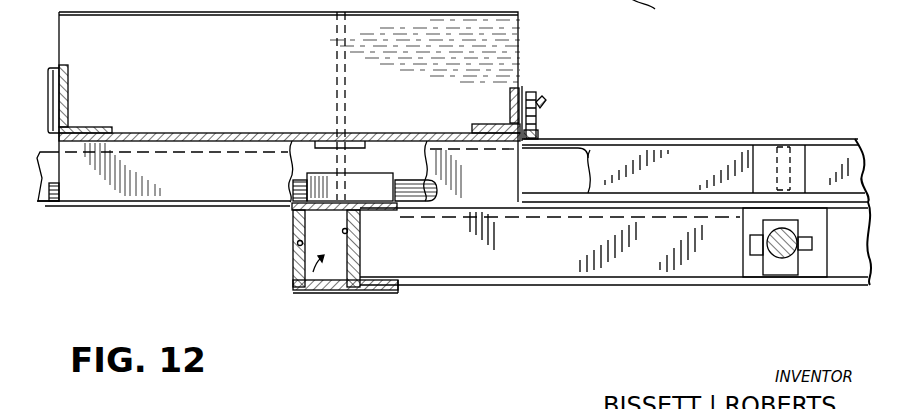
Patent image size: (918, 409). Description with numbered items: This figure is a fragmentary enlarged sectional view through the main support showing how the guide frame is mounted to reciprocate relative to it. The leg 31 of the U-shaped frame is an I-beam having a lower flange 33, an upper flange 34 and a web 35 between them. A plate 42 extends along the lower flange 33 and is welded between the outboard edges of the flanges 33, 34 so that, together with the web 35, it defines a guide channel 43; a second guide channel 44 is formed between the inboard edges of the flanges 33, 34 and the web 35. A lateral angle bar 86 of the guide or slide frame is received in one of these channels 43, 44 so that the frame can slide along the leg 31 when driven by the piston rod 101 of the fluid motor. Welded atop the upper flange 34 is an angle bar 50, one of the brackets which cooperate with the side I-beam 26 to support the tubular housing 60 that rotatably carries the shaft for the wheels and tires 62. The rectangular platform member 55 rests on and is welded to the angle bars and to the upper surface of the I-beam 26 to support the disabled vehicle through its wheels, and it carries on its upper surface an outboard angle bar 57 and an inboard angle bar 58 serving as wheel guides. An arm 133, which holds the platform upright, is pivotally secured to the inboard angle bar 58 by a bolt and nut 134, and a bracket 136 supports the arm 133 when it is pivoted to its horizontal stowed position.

The side I-beam 26 is at (356, 133).
The leg 31 is at (336, 301).
The lower flange 33 is at (330, 292).
The upper flange 34 is at (422, 188).
The web 35 is at (405, 288).
The plate 42 is at (296, 262).
The guide channel 43 is at (300, 292).
The guide channel 44 is at (364, 290).
The angle bar 50 is at (290, 172).
The platform member 55 is at (205, 133).
The outboard angle bar 57 is at (69, 90).
The inboard angle bar 58 is at (490, 124).
The tubular housing 60 is at (588, 176).
The wheels and tires 62 is at (662, 15).
The lateral angle bar 86 is at (297, 243).
The piston rod 101 is at (765, 280).
The arm 133 is at (522, 90).
The bolts and nuts 134 is at (540, 100).
The bracket 136 is at (546, 125).